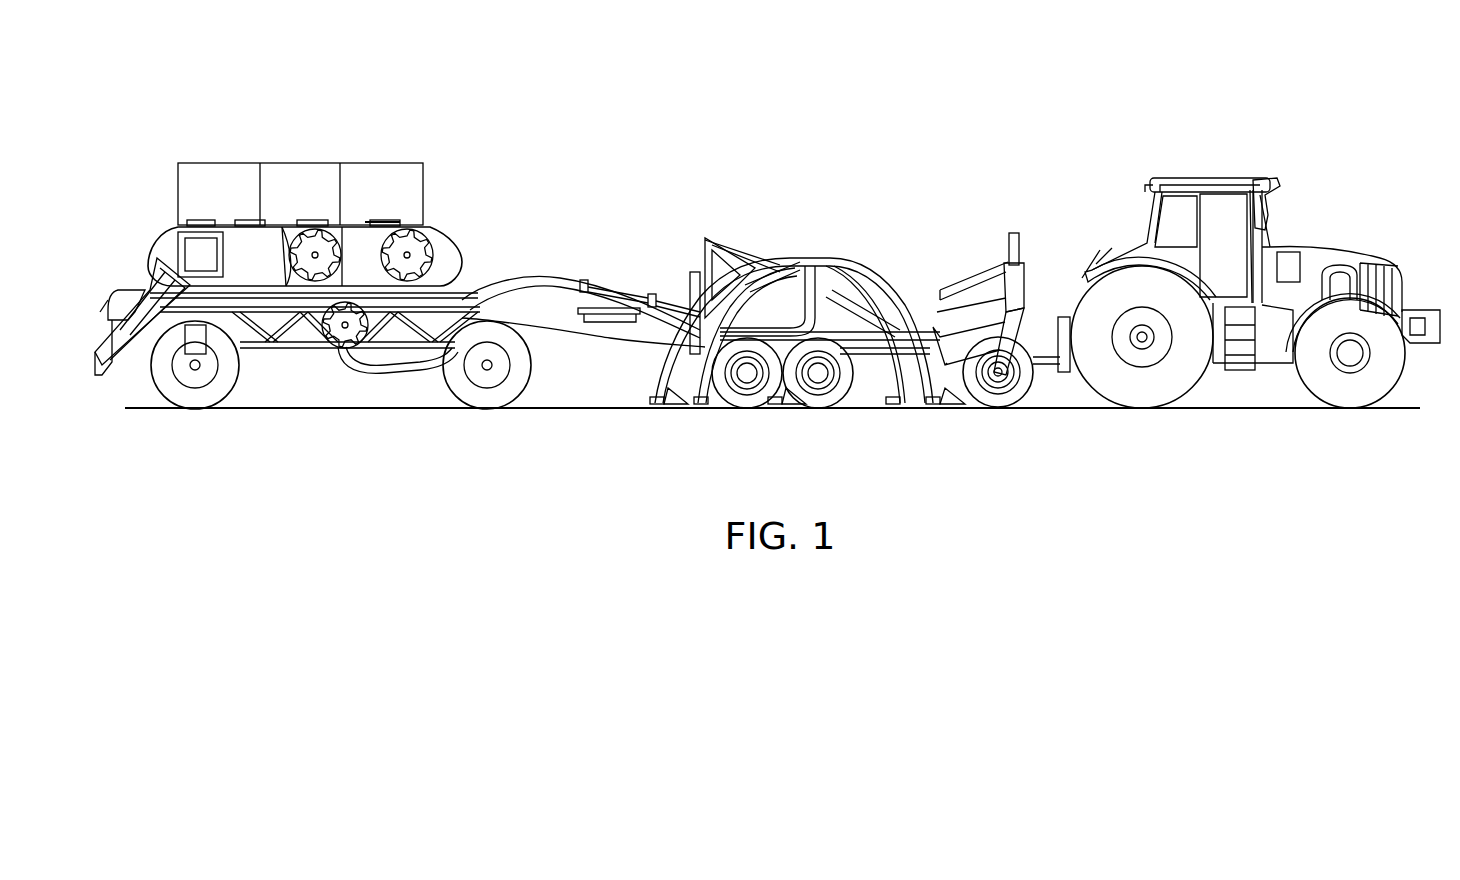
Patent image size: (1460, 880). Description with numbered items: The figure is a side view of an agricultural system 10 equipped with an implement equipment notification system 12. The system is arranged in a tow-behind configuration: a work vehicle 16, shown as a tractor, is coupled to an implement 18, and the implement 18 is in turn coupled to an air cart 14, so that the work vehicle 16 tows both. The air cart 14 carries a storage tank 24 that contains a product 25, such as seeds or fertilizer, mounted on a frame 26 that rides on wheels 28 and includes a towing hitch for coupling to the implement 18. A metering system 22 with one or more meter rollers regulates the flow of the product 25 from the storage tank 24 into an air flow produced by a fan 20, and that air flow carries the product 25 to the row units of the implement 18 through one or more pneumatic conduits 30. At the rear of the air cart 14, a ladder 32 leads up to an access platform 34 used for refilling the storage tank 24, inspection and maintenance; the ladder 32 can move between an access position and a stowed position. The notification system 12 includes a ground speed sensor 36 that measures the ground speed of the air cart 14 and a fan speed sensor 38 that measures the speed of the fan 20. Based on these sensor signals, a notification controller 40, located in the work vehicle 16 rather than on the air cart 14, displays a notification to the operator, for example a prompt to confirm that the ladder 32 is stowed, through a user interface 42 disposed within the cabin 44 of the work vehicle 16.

The agricultural system 10 is at (1147, 77).
The implement equipment notification system 12 is at (1073, 173).
The air cart 14 is at (457, 180).
The work vehicle 16 is at (1307, 175).
The implement 18 is at (843, 247).
The fan 20 is at (178, 256).
The metering system 22 is at (417, 247).
The storage tank 24 is at (328, 224).
The product 25 is at (388, 216).
The frame 26 is at (257, 350).
The wheels 28 is at (173, 393).
The pneumatic conduits 30 is at (548, 278).
The ladder 32 is at (120, 343).
The access platform 34 is at (210, 157).
The ground speed sensor 36 is at (200, 353).
The fan speed sensor 38 is at (224, 255).
The notification controller 40 is at (1300, 265).
The user interface 42 is at (1232, 227).
The cabin 44 is at (1217, 180).